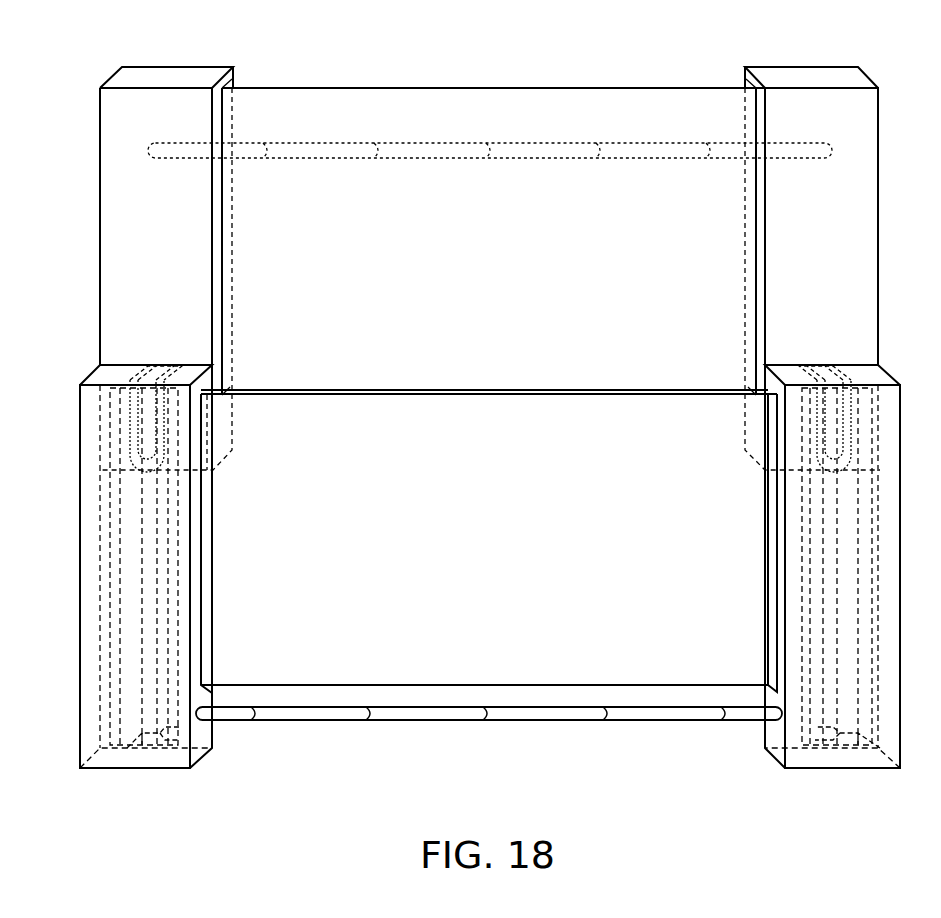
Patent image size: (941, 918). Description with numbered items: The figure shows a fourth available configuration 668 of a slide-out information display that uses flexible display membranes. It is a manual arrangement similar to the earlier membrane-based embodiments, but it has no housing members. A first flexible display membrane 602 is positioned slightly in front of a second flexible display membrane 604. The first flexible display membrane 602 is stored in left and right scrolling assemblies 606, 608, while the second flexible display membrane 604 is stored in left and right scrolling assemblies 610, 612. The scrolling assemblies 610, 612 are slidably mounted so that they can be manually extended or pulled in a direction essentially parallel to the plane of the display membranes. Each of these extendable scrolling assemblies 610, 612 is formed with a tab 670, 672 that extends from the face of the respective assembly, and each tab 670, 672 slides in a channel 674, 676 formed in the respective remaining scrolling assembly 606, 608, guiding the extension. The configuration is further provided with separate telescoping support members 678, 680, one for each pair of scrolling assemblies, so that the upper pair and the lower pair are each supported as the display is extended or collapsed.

The fourth available configuration 668 is at (540, 68).
The second flexible display membrane 604 is at (613, 88).
The first flexible display membrane 602 is at (433, 390).
The left scrolling assembly 610 is at (107, 115).
The right scrolling assembly 612 is at (870, 116).
The channel 674 is at (127, 732).
The channel 676 is at (852, 730).
The tab 670 is at (130, 447).
The tab 672 is at (848, 447).
The telescoping support member 678 is at (503, 160).
The telescoping support member 680 is at (580, 710).
The left scrolling assembly 606 is at (183, 720).
The right scrolling assembly 608 is at (793, 720).